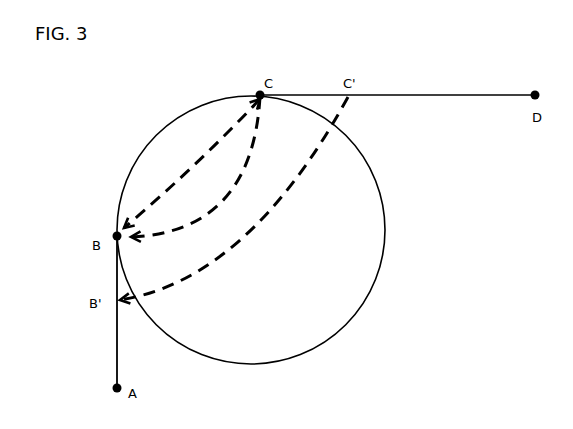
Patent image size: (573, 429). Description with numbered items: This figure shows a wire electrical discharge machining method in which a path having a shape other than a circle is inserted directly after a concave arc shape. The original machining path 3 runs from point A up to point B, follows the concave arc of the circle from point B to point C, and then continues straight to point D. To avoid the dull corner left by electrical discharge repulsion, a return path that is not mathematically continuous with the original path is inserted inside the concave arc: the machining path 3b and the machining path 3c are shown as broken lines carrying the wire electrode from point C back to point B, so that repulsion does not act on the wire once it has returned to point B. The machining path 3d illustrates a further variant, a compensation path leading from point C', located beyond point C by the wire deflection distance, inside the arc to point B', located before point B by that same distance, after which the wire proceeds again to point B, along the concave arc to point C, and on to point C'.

The machining path 3 is at (118, 362).
The machining path (inserted compensation path) 3b is at (210, 148).
The machining path (inserted compensation path) 3c is at (198, 214).
The machining path (compensation path) 3d is at (300, 185).